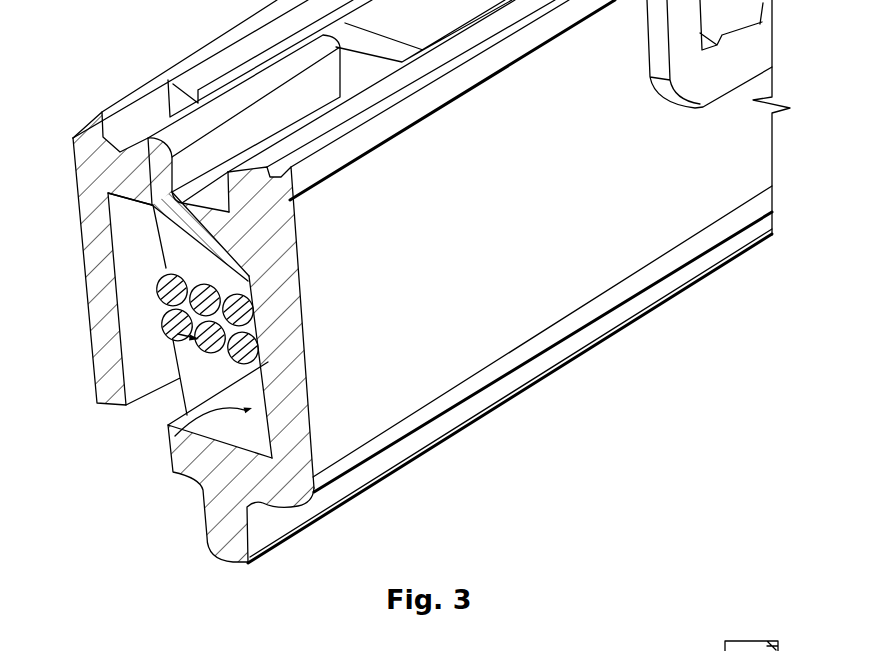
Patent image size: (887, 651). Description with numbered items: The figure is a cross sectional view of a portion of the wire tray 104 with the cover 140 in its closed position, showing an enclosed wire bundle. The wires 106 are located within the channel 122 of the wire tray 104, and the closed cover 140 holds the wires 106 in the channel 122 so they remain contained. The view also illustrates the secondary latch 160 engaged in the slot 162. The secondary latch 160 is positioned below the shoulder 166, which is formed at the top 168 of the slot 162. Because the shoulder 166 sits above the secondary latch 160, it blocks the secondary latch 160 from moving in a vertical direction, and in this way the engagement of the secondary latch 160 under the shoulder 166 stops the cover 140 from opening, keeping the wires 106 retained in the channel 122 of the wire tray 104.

The wire tray 104 is at (131, 60).
The wires 106 is at (168, 375).
The channel 122 is at (174, 473).
The cover 140 is at (250, 188).
The secondary latch 160 is at (104, 360).
The slot 162 is at (134, 211).
The shoulder 166 is at (108, 225).
The top 168 is at (135, 222).